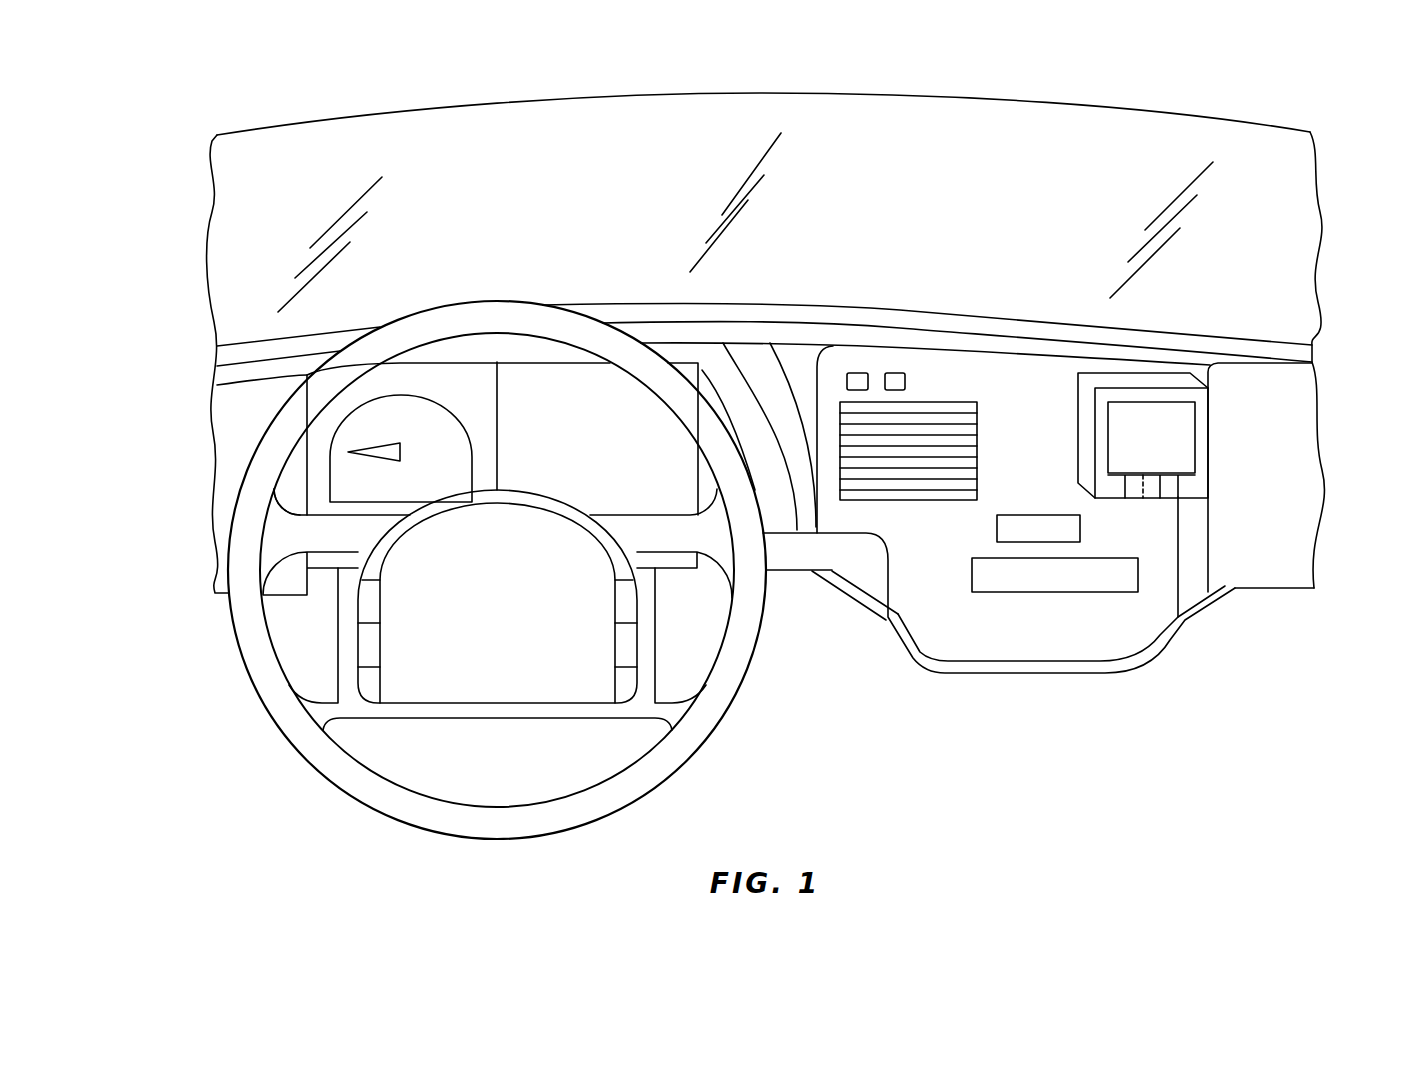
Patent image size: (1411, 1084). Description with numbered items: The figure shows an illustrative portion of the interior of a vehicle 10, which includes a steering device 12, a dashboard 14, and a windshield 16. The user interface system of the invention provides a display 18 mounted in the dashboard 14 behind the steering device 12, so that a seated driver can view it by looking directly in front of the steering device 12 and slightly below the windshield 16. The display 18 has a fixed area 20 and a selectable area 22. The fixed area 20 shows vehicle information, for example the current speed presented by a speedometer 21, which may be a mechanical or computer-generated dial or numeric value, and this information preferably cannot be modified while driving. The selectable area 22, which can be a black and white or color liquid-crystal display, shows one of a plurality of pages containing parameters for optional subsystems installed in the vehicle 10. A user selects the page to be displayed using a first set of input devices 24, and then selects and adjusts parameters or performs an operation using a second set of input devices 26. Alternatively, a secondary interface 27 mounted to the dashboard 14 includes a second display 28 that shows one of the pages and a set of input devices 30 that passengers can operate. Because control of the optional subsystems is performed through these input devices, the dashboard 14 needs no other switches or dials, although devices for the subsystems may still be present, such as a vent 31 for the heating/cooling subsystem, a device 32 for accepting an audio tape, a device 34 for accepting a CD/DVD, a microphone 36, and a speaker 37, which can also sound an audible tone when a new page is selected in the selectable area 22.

The vehicle 10 is at (160, 118).
The steering device 12 is at (340, 782).
The dashboard 14 is at (1280, 378).
The windshield 16 is at (572, 210).
The display 18 is at (283, 480).
The fixed area 20 is at (320, 462).
The speedometer 21 is at (392, 448).
The selectable area 22 is at (572, 455).
The first set of input devices 24 is at (362, 643).
The second set of input devices 26 is at (625, 644).
The secondary interface 27 is at (1222, 430).
The second display 28 is at (1136, 452).
The set of input devices 30 is at (1190, 485).
The vent 31 is at (955, 405).
The device for accepting an audio tape 32 is at (1002, 523).
The device for accepting a CD/DVD 34 is at (1007, 586).
The microphone 36 is at (858, 373).
The speaker 37 is at (895, 373).